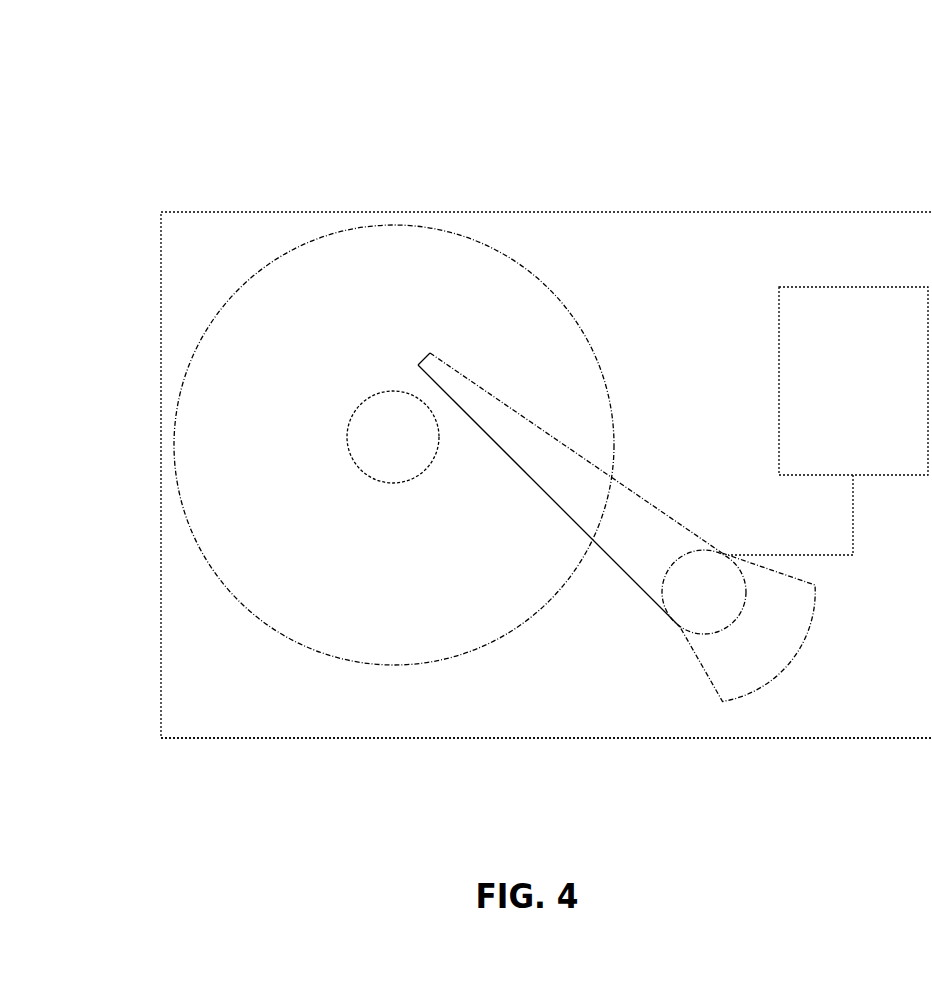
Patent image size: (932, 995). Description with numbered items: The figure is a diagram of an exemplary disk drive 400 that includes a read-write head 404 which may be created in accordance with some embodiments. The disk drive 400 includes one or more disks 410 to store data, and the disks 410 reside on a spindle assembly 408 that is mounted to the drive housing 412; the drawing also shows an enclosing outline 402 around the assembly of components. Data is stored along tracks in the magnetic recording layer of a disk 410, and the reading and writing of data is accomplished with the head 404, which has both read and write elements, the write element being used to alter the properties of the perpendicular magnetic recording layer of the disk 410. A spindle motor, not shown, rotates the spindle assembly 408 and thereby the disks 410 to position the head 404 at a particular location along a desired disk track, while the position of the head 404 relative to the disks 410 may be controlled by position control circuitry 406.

The disk drive 400 is at (585, 96).
The housing 402 is at (722, 212).
The head 404 is at (455, 369).
The position control circuitry 406 is at (828, 421).
The spindle assembly 408 is at (393, 437).
The disks 410 is at (302, 643).
The drive housing 412 is at (235, 738).